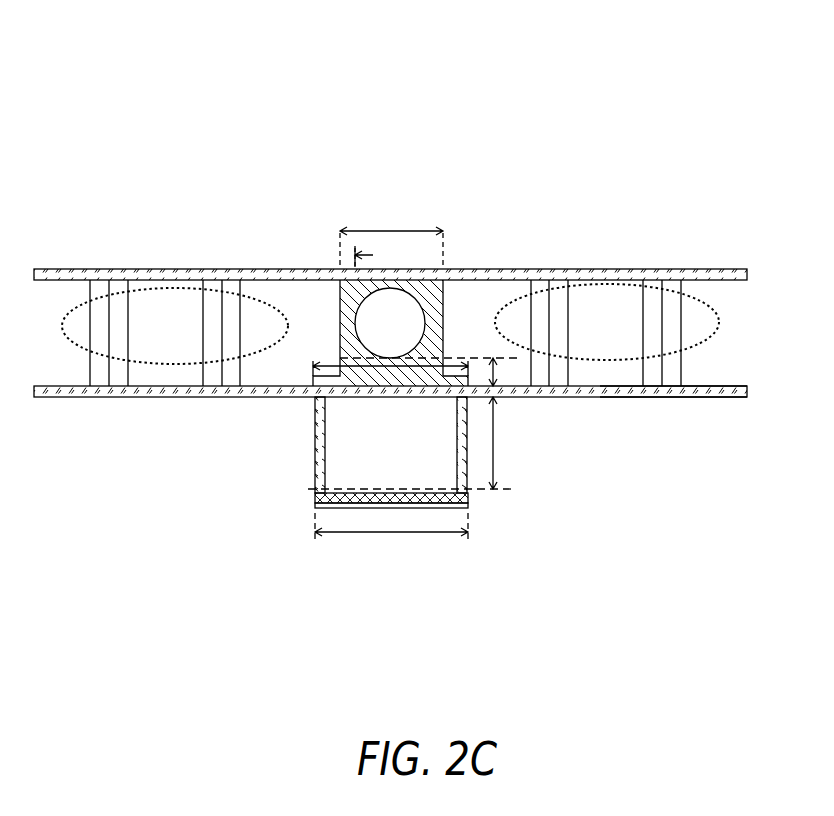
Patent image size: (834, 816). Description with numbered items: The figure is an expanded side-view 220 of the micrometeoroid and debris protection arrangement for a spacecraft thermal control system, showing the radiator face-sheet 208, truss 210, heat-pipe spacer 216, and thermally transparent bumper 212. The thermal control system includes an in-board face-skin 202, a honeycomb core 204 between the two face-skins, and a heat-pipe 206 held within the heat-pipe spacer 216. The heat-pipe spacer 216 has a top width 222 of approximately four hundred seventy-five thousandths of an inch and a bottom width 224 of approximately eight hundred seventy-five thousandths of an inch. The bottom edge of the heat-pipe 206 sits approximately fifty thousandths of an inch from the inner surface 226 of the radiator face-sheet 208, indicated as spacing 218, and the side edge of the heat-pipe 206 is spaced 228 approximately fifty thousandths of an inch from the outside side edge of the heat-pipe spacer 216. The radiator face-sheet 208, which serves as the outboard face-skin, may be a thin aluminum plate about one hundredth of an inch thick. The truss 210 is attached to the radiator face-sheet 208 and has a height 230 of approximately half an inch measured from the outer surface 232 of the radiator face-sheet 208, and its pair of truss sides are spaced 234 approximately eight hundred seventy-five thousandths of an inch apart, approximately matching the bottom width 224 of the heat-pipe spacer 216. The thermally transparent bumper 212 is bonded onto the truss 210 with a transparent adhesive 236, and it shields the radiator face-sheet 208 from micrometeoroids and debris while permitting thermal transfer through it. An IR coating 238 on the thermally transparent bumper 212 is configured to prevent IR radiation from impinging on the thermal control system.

The in-board face-skin 202 is at (737, 272).
The honeycomb core 204 is at (163, 363).
The heat-pipe 206 is at (408, 337).
The radiator face-sheet 208 is at (270, 392).
The truss 210 is at (457, 447).
The thermally transparent bumper 212 is at (342, 510).
The heat-pipe spacer 216 is at (438, 297).
The spacing 218 is at (500, 377).
The expanded side-view 220 is at (588, 130).
The top width 222 is at (403, 230).
The bottom width 224 is at (324, 360).
The inner surface 226 is at (718, 387).
The spacing 228 is at (333, 259).
The height 230 is at (493, 447).
The outer surface 232 is at (728, 398).
The spacing 234 is at (392, 533).
The transparent adhesive 236 is at (318, 492).
The IR coating 238 is at (348, 510).